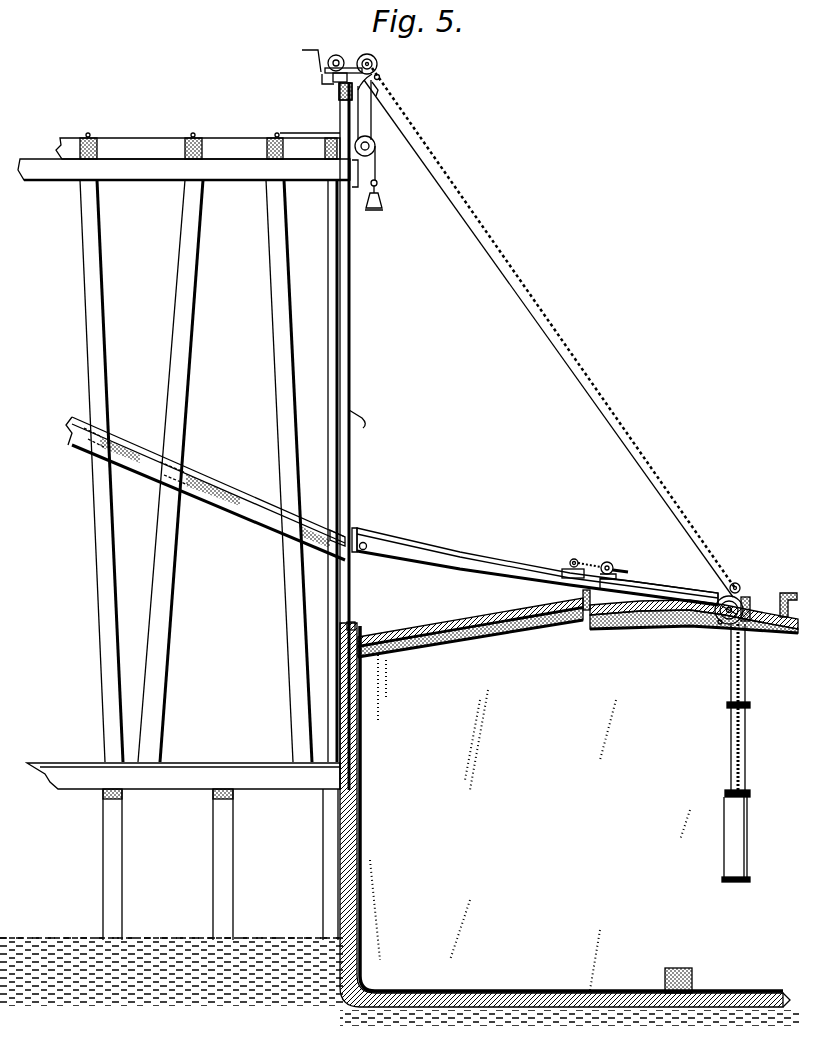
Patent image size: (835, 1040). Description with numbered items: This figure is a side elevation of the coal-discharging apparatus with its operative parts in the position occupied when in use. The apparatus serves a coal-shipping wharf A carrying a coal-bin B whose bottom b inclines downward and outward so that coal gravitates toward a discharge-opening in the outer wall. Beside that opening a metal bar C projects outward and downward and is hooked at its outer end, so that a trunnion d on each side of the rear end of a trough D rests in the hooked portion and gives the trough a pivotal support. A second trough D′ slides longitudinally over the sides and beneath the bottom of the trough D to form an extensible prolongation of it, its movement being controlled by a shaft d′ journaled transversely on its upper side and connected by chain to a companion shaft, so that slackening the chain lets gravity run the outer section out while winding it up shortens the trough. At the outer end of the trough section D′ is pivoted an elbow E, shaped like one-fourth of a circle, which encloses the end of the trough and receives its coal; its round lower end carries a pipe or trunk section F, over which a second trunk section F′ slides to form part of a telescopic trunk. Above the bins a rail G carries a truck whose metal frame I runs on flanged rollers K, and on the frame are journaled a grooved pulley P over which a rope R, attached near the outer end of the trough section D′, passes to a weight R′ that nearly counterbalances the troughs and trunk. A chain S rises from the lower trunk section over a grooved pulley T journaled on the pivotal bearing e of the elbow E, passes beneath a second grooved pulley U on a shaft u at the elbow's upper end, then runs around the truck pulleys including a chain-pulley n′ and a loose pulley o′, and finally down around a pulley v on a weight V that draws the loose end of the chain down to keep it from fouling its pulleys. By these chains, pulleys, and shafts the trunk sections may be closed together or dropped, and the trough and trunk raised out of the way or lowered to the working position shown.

The coal-shipping wharf A is at (172, 593).
The coal-bin B is at (184, 251).
The metal bar C is at (350, 413).
The bottom b is at (248, 505).
The trough D is at (500, 557).
The second trough D′ is at (672, 582).
The trunnion d is at (363, 550).
The shaft d′ is at (609, 562).
The chain S is at (421, 131).
The rope R is at (376, 158).
The weight R′ is at (377, 210).
The hook P′ is at (377, 183).
The metal frame I is at (369, 137).
The weight V is at (372, 100).
The pulley v is at (380, 77).
The grooved pulley P is at (378, 87).
The loose pulley o′ is at (376, 63).
The grooved chain-pulley n′ is at (339, 57).
The roller K is at (333, 76).
The bracket g′ is at (336, 83).
The rail G is at (341, 98).
The elbow E is at (746, 610).
The grooved pulley T is at (727, 626).
The pivotal bearing e is at (717, 624).
The grooved pulley U is at (740, 579).
The shaft u is at (741, 587).
The pipe or trunk section F is at (730, 680).
The second trunk-section F′ is at (746, 756).